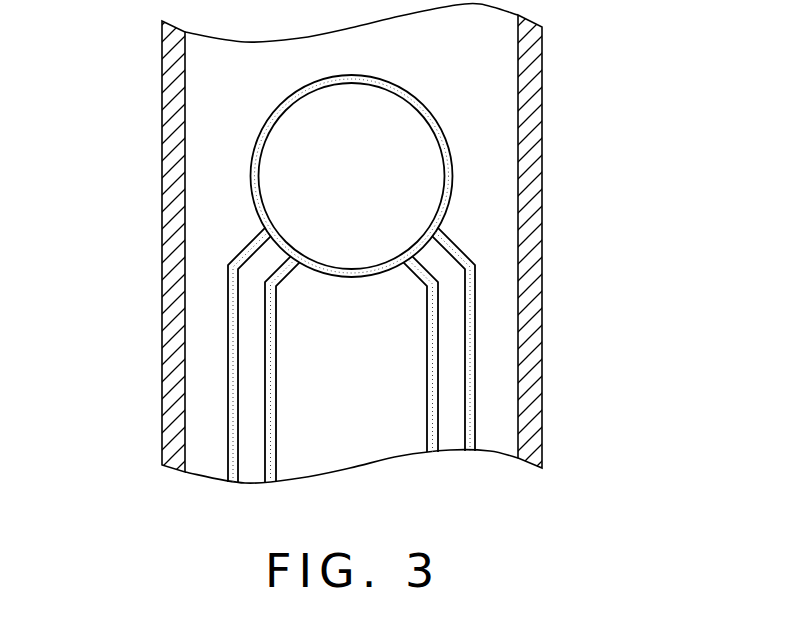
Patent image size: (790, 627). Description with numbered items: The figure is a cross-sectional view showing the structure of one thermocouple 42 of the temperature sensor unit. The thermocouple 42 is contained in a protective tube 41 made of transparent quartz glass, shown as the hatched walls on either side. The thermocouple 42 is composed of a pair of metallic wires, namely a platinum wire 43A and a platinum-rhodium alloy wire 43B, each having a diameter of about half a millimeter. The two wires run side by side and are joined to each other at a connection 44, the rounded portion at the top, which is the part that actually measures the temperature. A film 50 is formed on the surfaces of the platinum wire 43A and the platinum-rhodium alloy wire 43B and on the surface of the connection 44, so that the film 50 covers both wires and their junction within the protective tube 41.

The protective tube 41 is at (542, 190).
The thermocouple 42 is at (454, 122).
The platinum wire 43A is at (250, 368).
The platinum-rhodium alloy wire 43B is at (453, 353).
The connection 44 is at (400, 220).
The film 50 is at (252, 192).